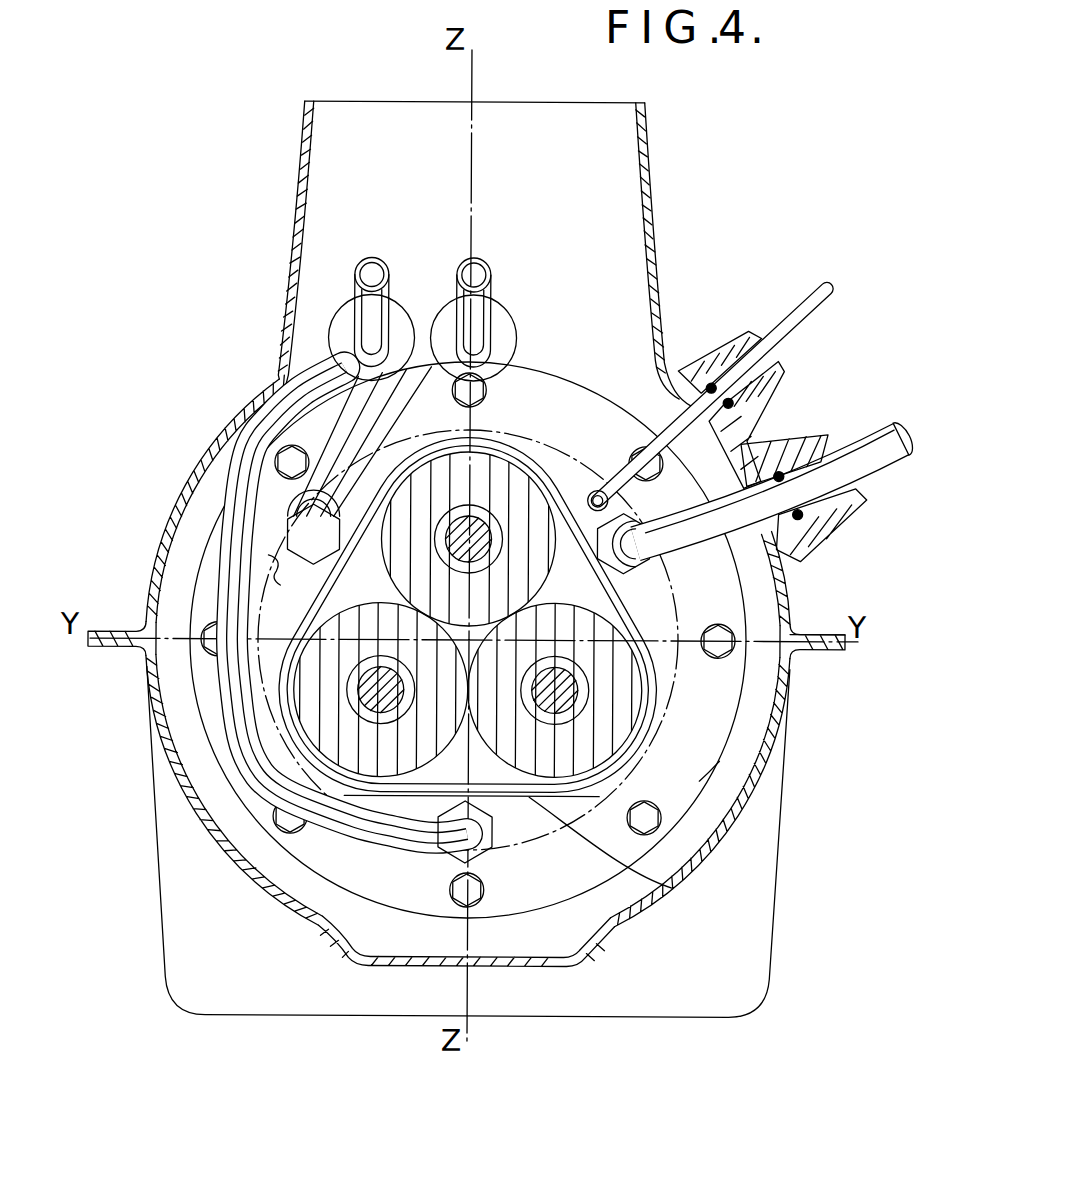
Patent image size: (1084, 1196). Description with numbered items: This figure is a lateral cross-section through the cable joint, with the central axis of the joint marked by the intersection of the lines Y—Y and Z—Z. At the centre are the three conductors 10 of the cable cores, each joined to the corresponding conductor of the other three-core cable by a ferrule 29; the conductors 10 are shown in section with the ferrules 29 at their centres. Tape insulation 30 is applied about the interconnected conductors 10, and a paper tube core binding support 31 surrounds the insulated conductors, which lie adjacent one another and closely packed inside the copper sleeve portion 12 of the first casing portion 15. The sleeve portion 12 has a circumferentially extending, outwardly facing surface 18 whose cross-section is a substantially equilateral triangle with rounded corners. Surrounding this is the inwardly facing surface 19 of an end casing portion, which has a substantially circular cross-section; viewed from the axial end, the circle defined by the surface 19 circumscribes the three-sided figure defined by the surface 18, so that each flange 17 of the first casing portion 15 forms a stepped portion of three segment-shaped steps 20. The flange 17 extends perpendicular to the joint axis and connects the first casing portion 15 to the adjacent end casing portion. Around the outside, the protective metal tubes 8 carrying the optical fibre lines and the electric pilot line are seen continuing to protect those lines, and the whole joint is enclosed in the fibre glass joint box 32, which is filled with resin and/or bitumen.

The protective metal tubes 8 is at (792, 326).
The conductors 10 is at (560, 690).
The sleeve portion 12 is at (373, 797).
The first casing portion 15 is at (657, 670).
The flange 17 is at (687, 765).
The outwardly facing surface 18 is at (673, 887).
The inwardly facing surface 19 is at (276, 572).
The segment-shaped steps 20 is at (664, 620).
The ferrules 29 is at (480, 516).
The tape insulation 30 is at (326, 697).
The paper tube core binding support 31 is at (423, 787).
The fibre glass joint box 32 is at (657, 260).